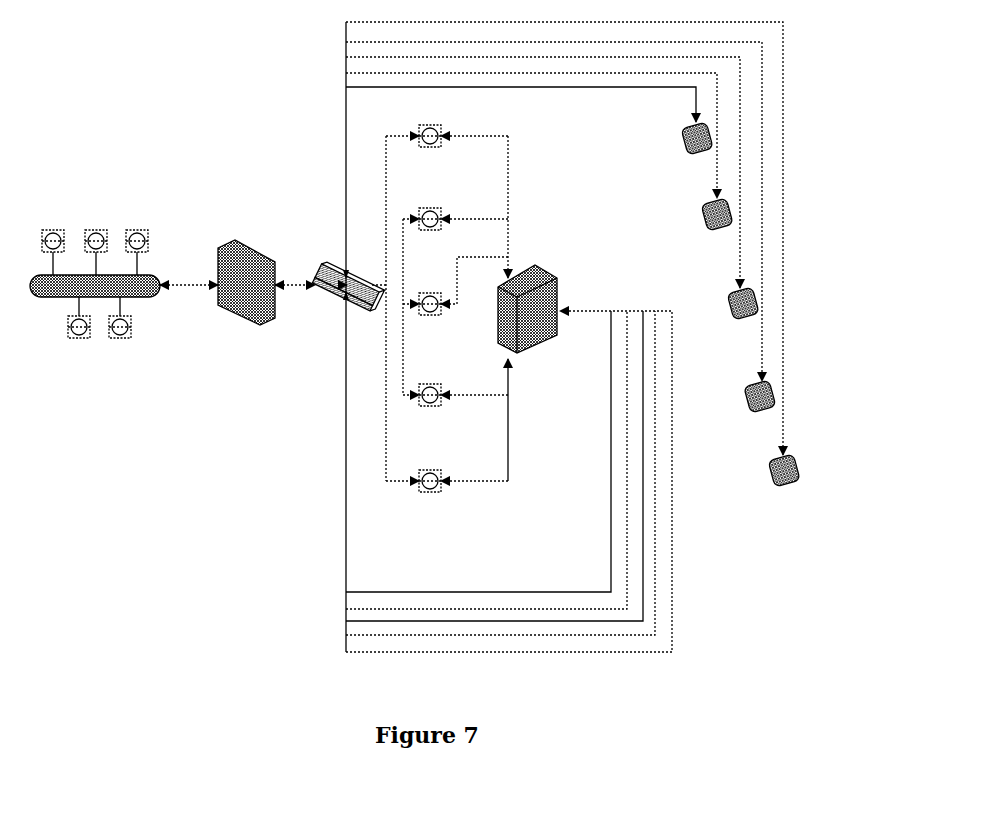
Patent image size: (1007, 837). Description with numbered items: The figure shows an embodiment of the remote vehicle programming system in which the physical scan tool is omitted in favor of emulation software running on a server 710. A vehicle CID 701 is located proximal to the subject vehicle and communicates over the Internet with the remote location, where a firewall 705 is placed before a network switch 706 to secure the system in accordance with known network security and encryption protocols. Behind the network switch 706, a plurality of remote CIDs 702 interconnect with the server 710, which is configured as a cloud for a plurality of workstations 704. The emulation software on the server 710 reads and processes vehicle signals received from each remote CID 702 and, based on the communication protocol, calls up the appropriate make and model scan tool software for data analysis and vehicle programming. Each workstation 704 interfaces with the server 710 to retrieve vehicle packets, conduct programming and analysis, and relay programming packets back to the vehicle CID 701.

The vehicle CID 701 is at (49, 229).
The remote CID 702 is at (427, 126).
The workstation 704 is at (766, 467).
The firewall 705 is at (213, 246).
The network switch 706 is at (333, 266).
The server 710 is at (551, 262).